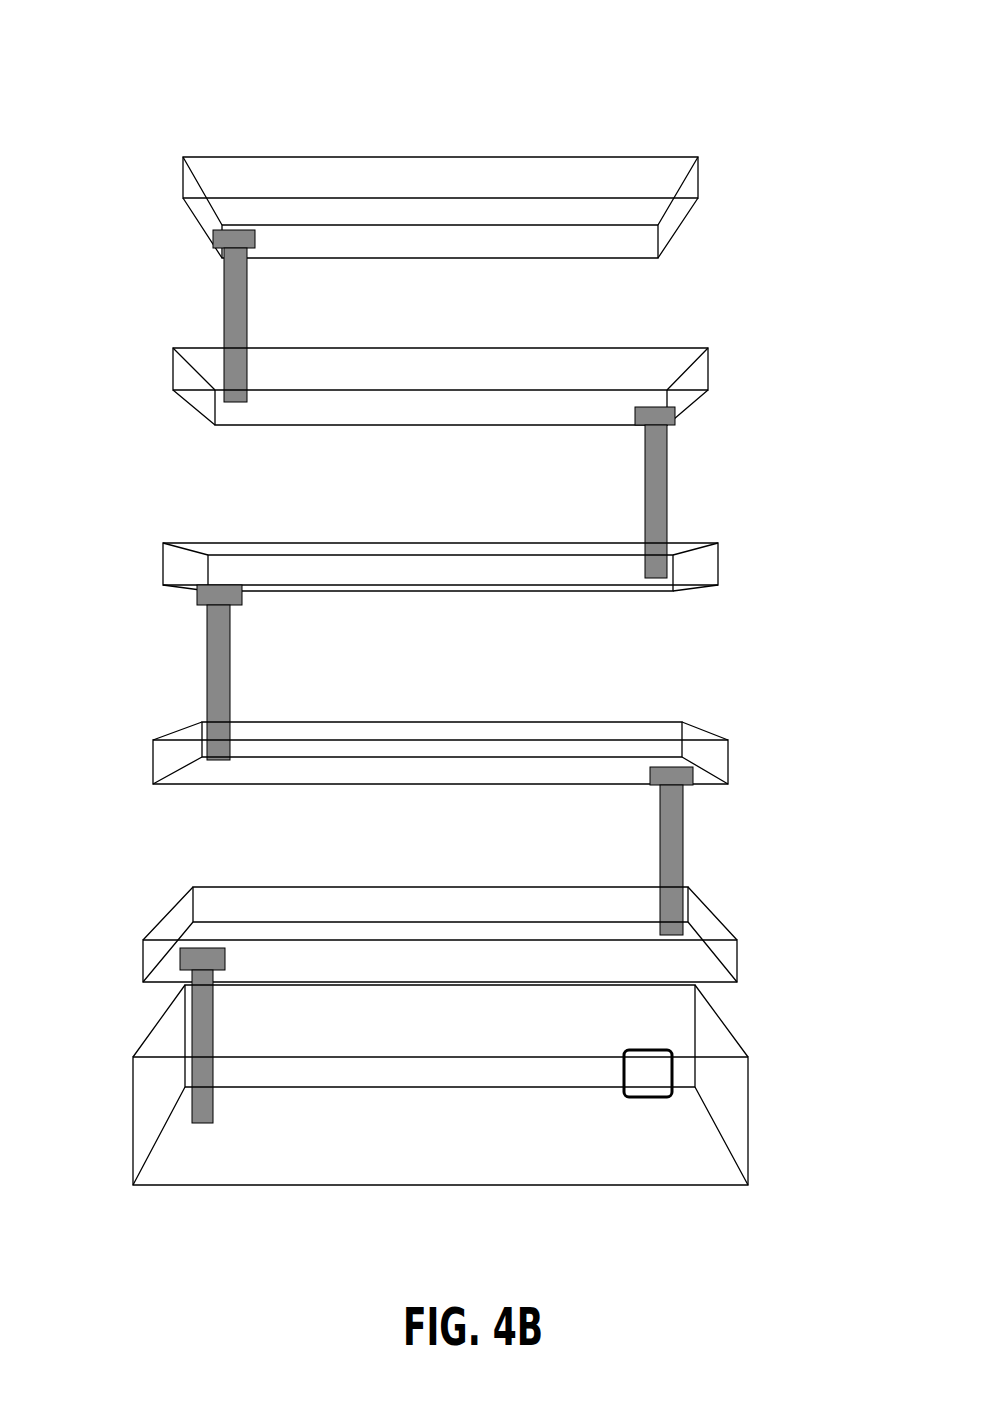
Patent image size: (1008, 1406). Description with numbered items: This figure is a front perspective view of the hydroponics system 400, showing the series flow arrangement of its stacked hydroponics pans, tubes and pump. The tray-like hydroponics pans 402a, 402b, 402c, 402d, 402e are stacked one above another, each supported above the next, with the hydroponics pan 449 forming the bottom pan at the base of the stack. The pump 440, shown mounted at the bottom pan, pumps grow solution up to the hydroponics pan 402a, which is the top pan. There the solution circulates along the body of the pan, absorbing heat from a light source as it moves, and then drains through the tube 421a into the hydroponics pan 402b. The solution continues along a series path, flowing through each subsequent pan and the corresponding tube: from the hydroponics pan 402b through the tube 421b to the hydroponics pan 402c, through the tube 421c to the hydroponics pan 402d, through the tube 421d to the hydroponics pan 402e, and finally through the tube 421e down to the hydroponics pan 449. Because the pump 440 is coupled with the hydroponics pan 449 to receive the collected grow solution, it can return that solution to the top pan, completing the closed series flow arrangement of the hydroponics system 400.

The hydroponics system 400 is at (122, 82).
The hydroponics pan 402a is at (205, 215).
The hydroponics pan 402b is at (703, 375).
The hydroponics pan 402c is at (175, 563).
The hydroponics pan 402d is at (693, 722).
The hydroponics pan 402e is at (163, 930).
The tube 421a is at (238, 305).
The tube 421b is at (668, 487).
The tube 421c is at (218, 690).
The tube 421d is at (685, 855).
The tube 421e is at (198, 1017).
The hydroponics pan 449 is at (720, 1012).
The pump 440 is at (672, 1072).